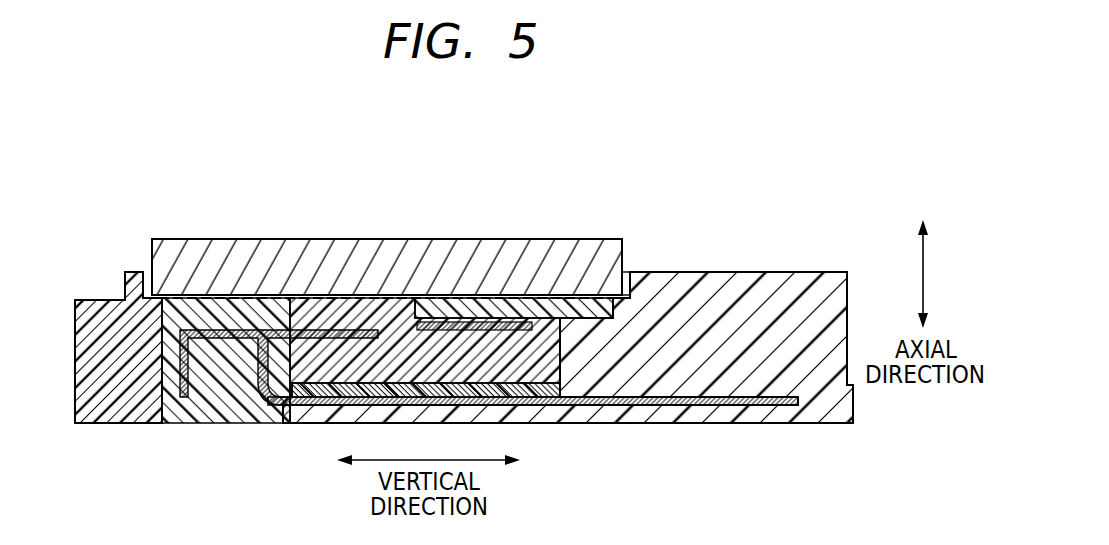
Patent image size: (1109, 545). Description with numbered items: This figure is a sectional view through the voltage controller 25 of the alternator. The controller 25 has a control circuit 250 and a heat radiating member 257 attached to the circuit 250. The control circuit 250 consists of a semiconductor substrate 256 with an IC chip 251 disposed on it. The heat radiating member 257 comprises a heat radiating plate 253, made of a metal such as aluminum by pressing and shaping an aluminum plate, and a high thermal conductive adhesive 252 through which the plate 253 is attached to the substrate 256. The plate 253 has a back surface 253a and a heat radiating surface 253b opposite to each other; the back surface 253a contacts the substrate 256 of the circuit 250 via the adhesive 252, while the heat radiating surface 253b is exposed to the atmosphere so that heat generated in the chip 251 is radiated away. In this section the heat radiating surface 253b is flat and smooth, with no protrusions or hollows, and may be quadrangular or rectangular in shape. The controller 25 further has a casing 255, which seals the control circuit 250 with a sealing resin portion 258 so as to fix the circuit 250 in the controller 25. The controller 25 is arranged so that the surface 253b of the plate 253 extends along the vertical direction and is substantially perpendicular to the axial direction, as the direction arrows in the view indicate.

The voltage controller 25 is at (705, 202).
The control circuit 250 is at (340, 148).
The IC chip 251 is at (440, 320).
The high thermal conductive adhesive 252 is at (627, 293).
The heat radiating plate 253 is at (491, 256).
The back surface 253a is at (602, 293).
The heat radiating surface 253b is at (540, 238).
The casing 255 is at (770, 291).
The semiconductor substrate 256 is at (460, 300).
The heat radiating member 257 is at (485, 120).
The sealing resin portion 258 is at (241, 313).